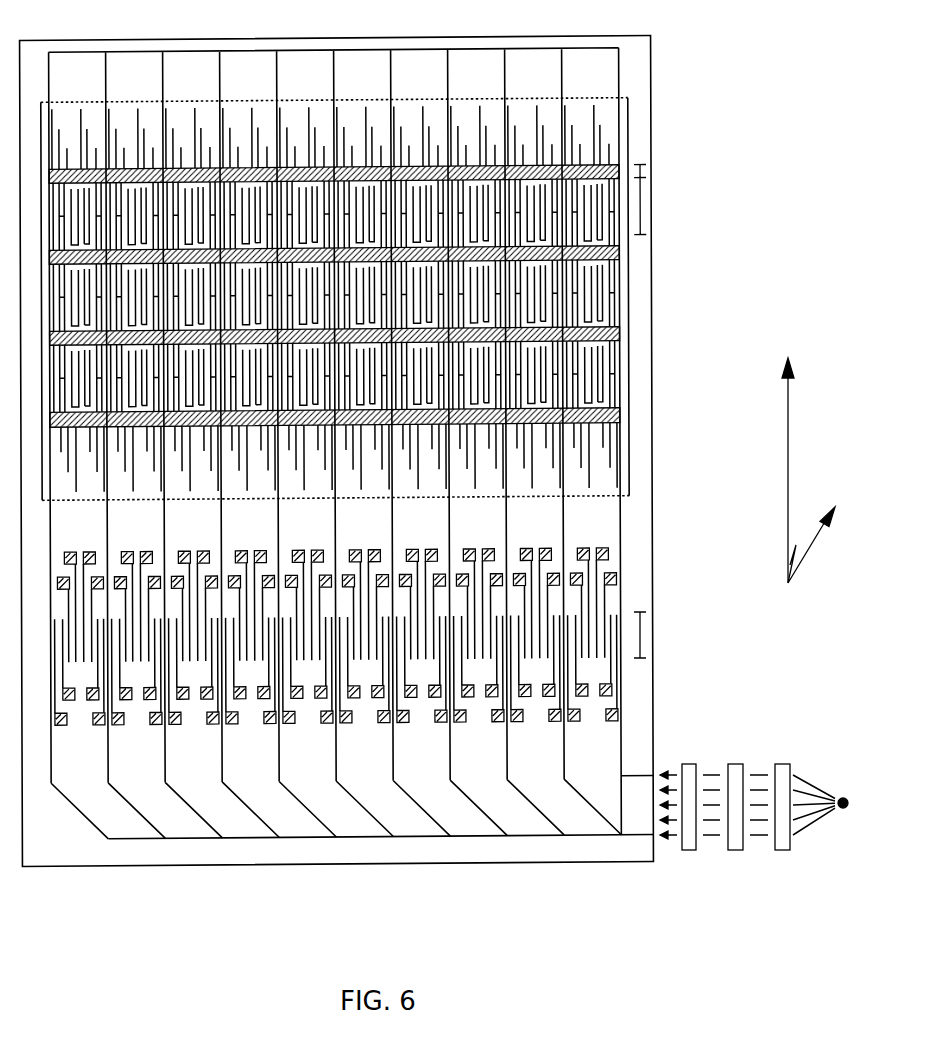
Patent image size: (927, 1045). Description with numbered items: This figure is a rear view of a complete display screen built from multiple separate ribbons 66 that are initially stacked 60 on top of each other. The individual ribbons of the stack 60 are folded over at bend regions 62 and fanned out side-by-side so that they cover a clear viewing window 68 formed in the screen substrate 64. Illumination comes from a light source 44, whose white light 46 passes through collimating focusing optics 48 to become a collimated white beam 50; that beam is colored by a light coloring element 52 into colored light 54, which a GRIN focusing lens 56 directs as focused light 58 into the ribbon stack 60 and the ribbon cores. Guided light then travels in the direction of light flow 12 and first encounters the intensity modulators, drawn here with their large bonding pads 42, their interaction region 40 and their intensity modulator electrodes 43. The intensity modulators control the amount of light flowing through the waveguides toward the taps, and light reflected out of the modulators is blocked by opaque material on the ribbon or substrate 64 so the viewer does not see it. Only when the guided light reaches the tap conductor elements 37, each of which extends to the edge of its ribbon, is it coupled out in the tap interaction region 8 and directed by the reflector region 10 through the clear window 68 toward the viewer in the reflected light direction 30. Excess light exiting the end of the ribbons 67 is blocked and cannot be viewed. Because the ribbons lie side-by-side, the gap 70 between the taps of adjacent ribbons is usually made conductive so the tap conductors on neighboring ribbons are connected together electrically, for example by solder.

The light exiting the end of the ribbons 67 is at (476, 42).
The individual ribbons 66 is at (526, 80).
The clear viewing window in substrate 68 is at (636, 468).
The reflector region 10 is at (648, 166).
The tap interaction region 8 is at (648, 193).
The tap conductor element 37 is at (620, 254).
The gap between separate ribbon taps 70 is at (620, 421).
The direction of light flow through the waveguide 12 is at (795, 432).
The direction of light reflected out of supercladding to the viewer 30 is at (815, 549).
The large size bonding pads 42 is at (609, 553).
The interaction region for intensity modulators 40 is at (647, 633).
The intensity modulator electrode 43 is at (593, 643).
The bend regions 62 is at (373, 798).
The screen substrate 64 is at (512, 852).
The stack of waveguide ribbons 60 is at (640, 812).
The focused light entering ribbon stack 58 is at (670, 845).
The focusing lens 56 is at (687, 850).
The colored light 54 is at (713, 840).
The light coloring element 52 is at (735, 850).
The collimated white light 50 is at (760, 840).
The collimating focusing optics 48 is at (782, 850).
The white light from source 46 is at (810, 835).
The light source 44 is at (840, 820).